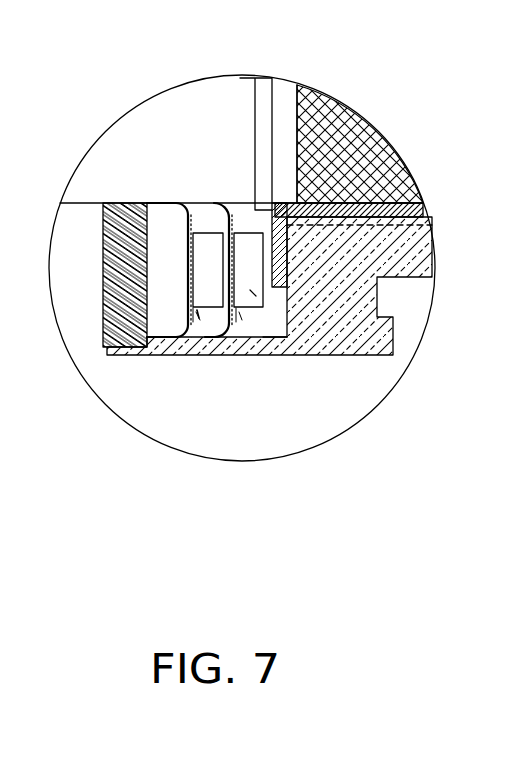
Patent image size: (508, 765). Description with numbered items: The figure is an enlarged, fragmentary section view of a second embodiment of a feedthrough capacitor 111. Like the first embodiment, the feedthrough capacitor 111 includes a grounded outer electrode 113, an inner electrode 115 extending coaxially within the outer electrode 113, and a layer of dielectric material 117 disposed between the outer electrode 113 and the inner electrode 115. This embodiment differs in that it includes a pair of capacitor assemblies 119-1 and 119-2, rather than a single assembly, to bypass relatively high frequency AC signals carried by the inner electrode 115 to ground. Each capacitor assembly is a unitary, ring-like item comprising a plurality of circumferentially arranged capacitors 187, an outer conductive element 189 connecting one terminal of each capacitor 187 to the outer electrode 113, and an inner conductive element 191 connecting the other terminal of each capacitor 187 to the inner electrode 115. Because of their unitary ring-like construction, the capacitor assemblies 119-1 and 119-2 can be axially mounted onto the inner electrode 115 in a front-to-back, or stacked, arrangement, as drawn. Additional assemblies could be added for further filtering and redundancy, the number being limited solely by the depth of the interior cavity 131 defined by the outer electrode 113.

The feedthrough capacitor 111 is at (373, 414).
The grounded outer electrode 113 is at (410, 267).
The inner electrode 115 is at (233, 87).
The layer of dielectric material 117 is at (422, 210).
The capacitor assembly 119-1 is at (195, 322).
The capacitor assembly 119-2 is at (235, 312).
The interior cavity 131 is at (163, 248).
The capacitors 187 is at (253, 293).
The outer conductive element 189 is at (197, 313).
The inner conductive element 191 is at (183, 208).